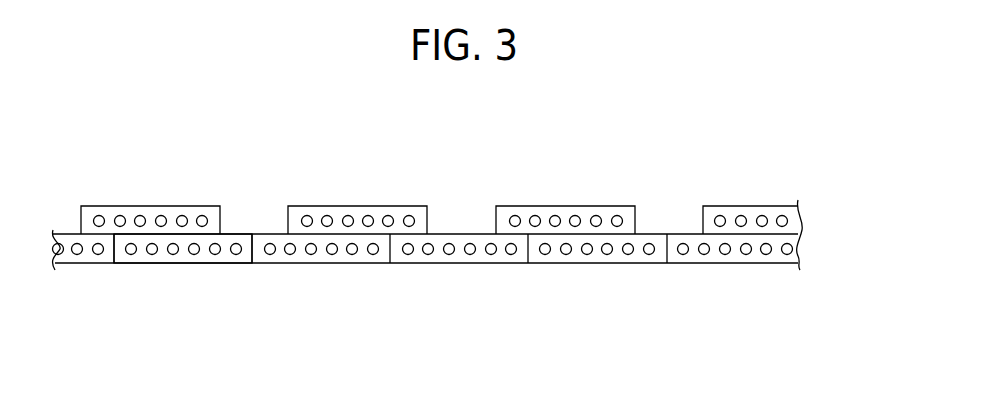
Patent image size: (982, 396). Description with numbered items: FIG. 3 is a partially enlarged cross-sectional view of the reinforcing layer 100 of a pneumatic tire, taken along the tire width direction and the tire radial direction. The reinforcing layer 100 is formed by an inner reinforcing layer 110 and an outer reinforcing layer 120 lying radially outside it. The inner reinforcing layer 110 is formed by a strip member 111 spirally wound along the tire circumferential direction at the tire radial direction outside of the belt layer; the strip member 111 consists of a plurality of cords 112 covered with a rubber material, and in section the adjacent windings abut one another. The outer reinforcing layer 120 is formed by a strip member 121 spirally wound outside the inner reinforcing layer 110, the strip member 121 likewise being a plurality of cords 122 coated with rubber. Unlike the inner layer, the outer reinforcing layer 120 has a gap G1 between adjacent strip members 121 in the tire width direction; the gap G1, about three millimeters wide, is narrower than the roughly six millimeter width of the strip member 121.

The reinforcing layer 100 is at (668, 173).
The inner reinforcing layer 110 is at (795, 252).
The strip member 111 is at (231, 257).
The cords 112 is at (175, 253).
The outer reinforcing layer 120 is at (795, 222).
The strip member 121 is at (187, 206).
The cords 122 is at (142, 216).
The gap G1 is at (451, 208).